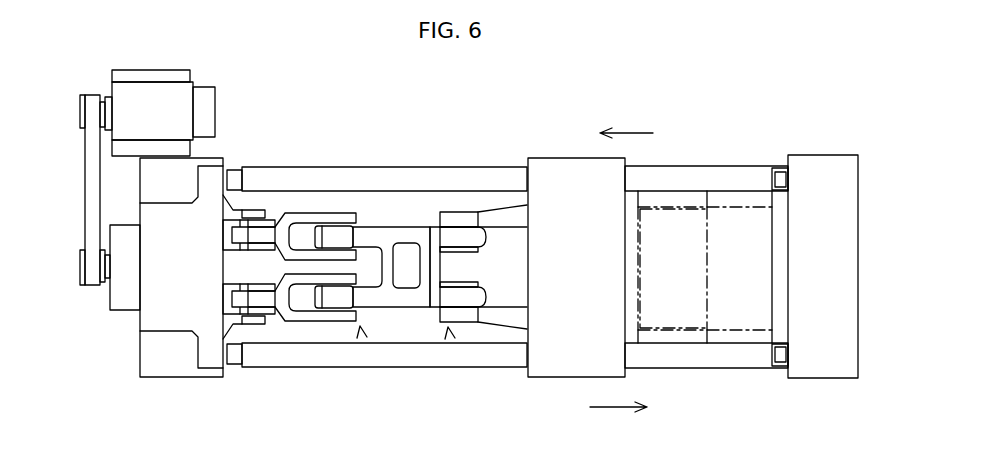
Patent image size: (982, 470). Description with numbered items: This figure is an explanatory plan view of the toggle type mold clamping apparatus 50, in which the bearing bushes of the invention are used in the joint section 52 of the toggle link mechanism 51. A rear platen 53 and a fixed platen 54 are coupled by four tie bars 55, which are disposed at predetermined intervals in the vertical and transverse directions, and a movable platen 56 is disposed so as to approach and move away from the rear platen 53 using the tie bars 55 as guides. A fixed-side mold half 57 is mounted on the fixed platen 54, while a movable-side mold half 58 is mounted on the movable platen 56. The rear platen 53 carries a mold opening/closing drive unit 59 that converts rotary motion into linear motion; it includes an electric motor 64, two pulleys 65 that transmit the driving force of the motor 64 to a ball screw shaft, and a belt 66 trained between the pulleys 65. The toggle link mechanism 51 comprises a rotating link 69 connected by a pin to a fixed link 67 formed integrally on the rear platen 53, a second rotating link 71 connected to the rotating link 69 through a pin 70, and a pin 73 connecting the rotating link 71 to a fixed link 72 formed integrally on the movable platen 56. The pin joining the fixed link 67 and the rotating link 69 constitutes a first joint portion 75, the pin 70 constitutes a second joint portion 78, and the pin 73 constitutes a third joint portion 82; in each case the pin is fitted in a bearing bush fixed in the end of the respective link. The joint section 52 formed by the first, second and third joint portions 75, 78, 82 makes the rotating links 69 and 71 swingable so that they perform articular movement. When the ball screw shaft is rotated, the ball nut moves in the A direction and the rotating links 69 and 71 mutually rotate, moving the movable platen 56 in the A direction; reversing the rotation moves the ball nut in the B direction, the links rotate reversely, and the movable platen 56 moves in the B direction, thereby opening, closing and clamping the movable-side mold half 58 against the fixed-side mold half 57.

The toggle type mold clamping apparatus 50 is at (373, 155).
The toggle link mechanism 51 is at (287, 178).
The joint section 52 is at (338, 327).
The rear platen 53 is at (168, 315).
The fixed platen 54 is at (822, 168).
The tie bars 55 is at (686, 181).
The movable platen 56 is at (570, 187).
The fixed-side mold half 57 is at (740, 233).
The movable-side mold half 58 is at (687, 294).
The mold opening/closing drive unit 59 is at (125, 295).
The electric motor 64 is at (153, 102).
The pulleys 65 is at (80, 108).
The belt 66 is at (93, 195).
The fixed link 67 is at (256, 216).
The rotating link 69 is at (322, 214).
The pin 70 is at (340, 226).
The rotating link 71 is at (408, 238).
The fixed link 72 is at (456, 216).
The pin 73 is at (466, 246).
The first joint portion 75 is at (258, 330).
The second joint portion 78 is at (361, 328).
The third joint portion 82 is at (449, 329).